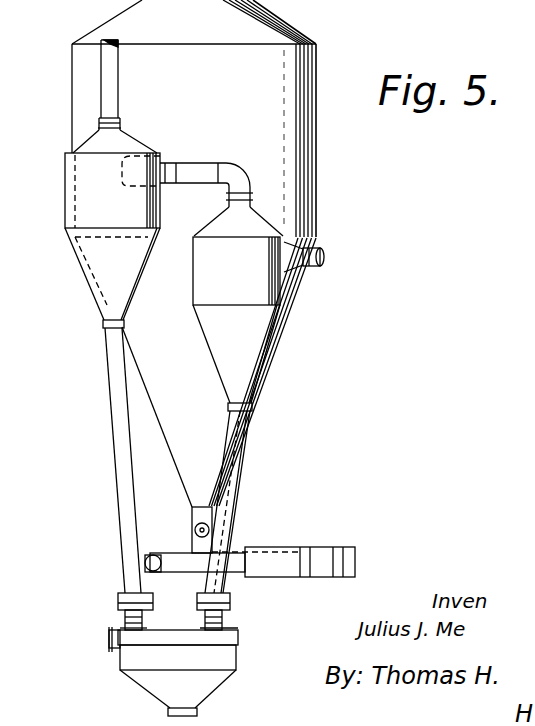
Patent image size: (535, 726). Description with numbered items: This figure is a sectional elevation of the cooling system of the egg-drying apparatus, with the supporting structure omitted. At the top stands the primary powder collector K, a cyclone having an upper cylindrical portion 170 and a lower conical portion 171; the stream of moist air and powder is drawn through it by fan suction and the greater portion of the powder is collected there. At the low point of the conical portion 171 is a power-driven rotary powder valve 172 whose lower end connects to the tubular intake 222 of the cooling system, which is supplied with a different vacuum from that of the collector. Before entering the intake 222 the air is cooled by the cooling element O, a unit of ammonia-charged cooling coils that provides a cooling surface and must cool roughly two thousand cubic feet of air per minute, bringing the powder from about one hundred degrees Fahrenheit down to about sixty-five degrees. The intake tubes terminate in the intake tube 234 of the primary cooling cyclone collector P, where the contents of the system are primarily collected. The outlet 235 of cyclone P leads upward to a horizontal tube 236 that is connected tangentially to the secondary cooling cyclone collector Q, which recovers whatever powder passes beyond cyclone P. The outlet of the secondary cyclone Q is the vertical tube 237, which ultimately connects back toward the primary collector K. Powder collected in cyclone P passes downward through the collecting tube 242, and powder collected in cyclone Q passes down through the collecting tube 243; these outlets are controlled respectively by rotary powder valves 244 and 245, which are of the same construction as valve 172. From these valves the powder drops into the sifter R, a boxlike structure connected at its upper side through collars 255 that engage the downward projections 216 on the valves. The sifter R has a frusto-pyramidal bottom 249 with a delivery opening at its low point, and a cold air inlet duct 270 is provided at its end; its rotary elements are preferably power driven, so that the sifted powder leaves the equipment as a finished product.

The primary powder collector K is at (300, 78).
The upper cylindrical portion 170 is at (300, 152).
The lower conical portion 171 is at (170, 405).
The powder valve 172 is at (195, 532).
The intake tube 234 is at (323, 252).
The outlet 235 is at (235, 190).
The horizontal tube 236 is at (193, 172).
The tube 237 is at (110, 100).
The secondary cooling cyclone collector Q is at (82, 211).
The primary cooling cyclone collector P is at (270, 293).
The collecting tube 243 is at (125, 462).
The collecting tube 242 is at (238, 463).
The tubular intake 222 is at (146, 556).
The cooling element O is at (318, 552).
The rotary powder valve 245 is at (118, 600).
The rotary powder valve 244 is at (229, 603).
The lower end / downward projection 216 is at (125, 619).
The collars 255 is at (207, 627).
The sifter R is at (240, 651).
The frusto-pyramidal bottom 249 is at (147, 675).
The cold air inlet duct 270 is at (113, 650).